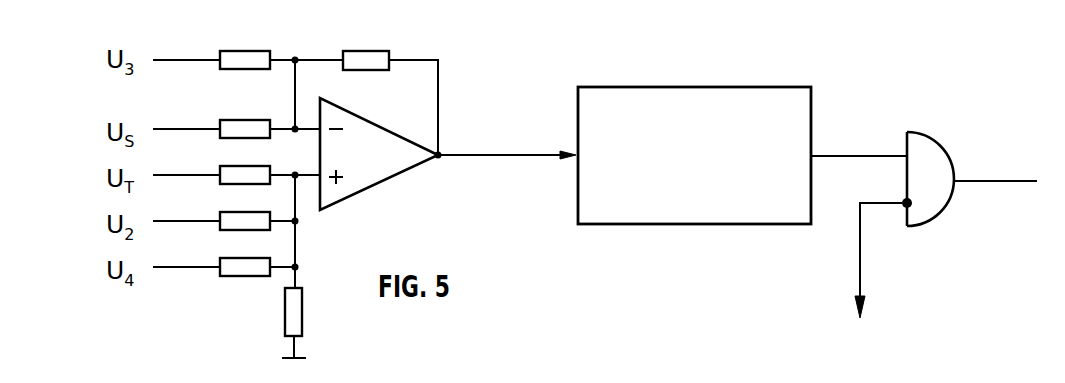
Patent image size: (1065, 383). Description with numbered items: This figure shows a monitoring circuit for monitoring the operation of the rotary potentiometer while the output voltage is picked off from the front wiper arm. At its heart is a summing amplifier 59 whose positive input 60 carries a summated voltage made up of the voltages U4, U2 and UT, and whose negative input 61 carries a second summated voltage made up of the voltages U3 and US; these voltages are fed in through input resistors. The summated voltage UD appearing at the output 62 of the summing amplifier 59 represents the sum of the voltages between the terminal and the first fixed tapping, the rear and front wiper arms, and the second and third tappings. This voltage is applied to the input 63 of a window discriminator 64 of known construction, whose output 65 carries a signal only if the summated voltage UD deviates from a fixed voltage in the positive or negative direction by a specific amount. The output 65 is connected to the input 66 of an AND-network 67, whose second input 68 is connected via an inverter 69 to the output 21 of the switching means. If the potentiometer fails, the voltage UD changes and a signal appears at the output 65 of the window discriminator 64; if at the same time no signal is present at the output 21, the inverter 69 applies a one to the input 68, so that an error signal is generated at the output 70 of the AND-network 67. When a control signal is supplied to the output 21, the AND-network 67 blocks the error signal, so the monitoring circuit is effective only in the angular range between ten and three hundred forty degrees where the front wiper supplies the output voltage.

The output of the switching means 21 is at (858, 323).
The summing amplifier 59 is at (388, 171).
The positive input 60 is at (308, 180).
The negative input 61 is at (304, 124).
The output of the summing amplifier 62 is at (484, 152).
The input of the window discriminator 63 is at (573, 158).
The window discriminator 64 is at (702, 212).
The output of the window discriminator 65 is at (814, 152).
The input of the AND-network 66 is at (905, 152).
The AND-network 67 is at (935, 142).
The second input of the AND-network 68 is at (902, 201).
The inverter 69 is at (900, 212).
The output of the AND-network 70 is at (997, 186).